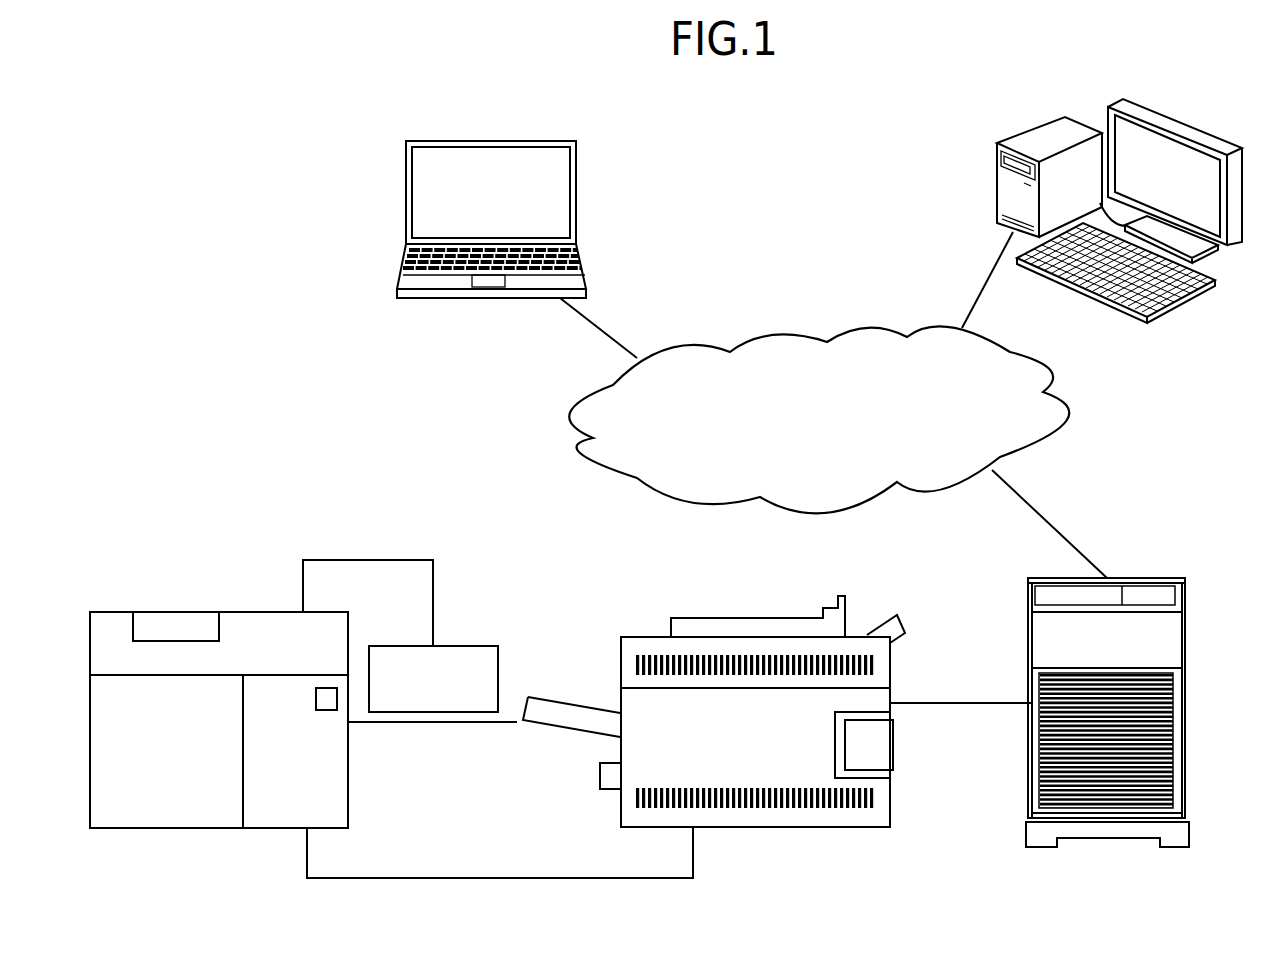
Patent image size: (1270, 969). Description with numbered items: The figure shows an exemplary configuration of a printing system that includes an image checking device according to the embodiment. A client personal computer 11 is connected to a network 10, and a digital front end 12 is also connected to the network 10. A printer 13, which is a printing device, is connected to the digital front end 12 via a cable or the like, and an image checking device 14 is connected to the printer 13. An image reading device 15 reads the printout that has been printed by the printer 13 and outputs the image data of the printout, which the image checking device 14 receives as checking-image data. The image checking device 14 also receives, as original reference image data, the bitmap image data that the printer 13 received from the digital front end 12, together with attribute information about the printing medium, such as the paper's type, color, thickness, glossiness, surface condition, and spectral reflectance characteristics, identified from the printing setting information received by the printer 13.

The network 10 is at (775, 333).
The client personal computer 11 is at (1013, 133).
The digital front end 12 is at (1185, 636).
The printer 13 is at (873, 827).
The image checking device 14 is at (111, 829).
The image reading device 15 is at (483, 646).